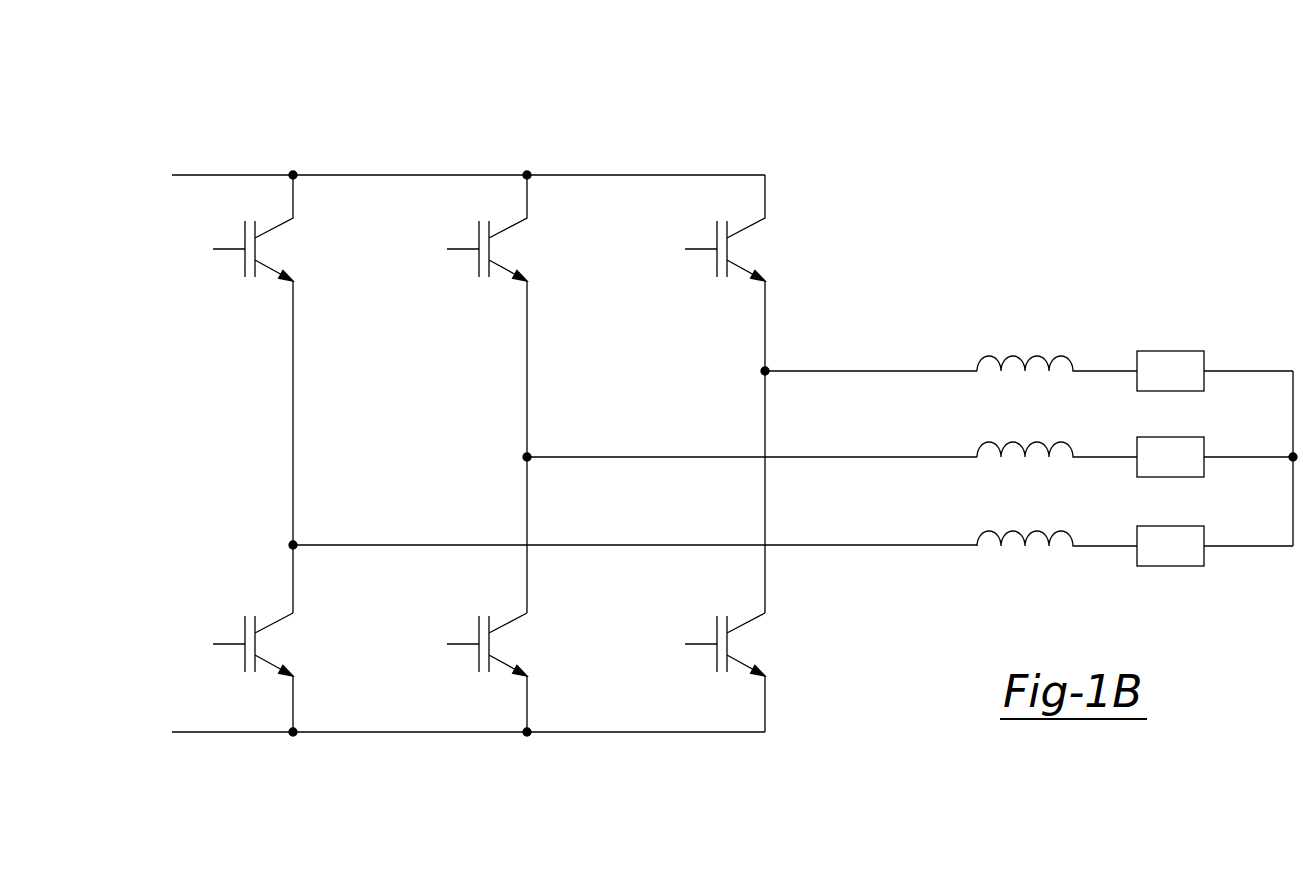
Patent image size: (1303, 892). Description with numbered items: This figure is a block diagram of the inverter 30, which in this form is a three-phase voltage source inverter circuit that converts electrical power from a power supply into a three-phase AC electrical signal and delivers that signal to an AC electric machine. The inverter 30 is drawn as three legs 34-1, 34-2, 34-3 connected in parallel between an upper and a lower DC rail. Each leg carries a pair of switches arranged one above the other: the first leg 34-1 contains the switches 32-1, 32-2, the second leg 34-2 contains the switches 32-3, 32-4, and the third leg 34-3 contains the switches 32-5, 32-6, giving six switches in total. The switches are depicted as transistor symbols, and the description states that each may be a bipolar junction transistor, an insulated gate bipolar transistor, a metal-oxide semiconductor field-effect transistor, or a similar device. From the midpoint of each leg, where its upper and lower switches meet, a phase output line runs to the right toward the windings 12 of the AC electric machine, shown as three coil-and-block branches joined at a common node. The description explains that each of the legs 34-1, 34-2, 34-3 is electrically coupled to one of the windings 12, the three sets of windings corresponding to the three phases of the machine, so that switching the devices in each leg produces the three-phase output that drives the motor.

The inverter 30 is at (521, 373).
The leg 34-1 is at (300, 408).
The leg 34-2 is at (534, 408).
The leg 34-3 is at (773, 408).
The switch 32-1 is at (249, 248).
The switch 32-2 is at (249, 672).
The switch 32-3 is at (482, 248).
The switch 32-4 is at (482, 672).
The switch 32-5 is at (721, 248).
The switch 32-6 is at (721, 672).
The windings 12 is at (1052, 332).